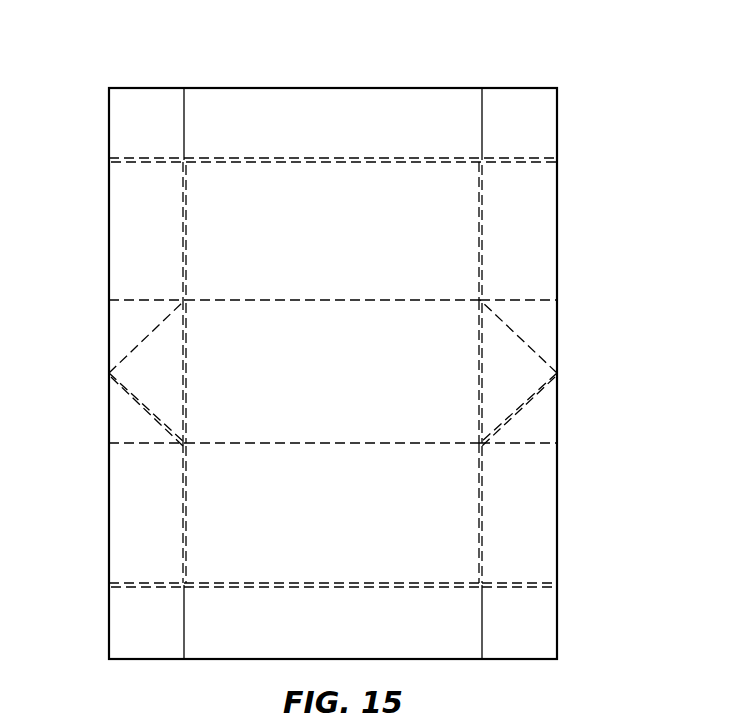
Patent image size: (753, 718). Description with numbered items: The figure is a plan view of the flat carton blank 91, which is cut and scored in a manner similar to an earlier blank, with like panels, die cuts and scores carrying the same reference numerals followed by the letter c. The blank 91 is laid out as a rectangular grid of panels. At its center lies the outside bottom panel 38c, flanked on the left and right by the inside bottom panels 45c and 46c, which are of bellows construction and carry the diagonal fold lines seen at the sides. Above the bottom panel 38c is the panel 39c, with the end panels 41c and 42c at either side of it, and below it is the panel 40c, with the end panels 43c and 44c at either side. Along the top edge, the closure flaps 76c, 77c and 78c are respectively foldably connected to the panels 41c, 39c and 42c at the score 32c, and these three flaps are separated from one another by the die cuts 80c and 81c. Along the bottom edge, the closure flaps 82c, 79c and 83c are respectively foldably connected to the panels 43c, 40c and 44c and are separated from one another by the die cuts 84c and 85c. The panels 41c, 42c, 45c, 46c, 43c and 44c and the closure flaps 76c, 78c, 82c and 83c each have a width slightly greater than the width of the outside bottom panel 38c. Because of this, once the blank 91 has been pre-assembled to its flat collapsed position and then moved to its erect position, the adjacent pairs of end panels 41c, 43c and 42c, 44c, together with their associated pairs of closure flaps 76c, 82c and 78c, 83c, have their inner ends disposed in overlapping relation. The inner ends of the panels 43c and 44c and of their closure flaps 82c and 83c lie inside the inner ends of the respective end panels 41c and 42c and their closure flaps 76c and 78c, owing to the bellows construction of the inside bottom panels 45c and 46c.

The blank 91 is at (565, 208).
The closure flap 76c is at (164, 126).
The closure flap 77c is at (352, 126).
The closure flap 78c is at (541, 127).
The die cut 80c is at (184, 120).
The die cut 81c is at (483, 103).
The score 32c is at (312, 161).
The end panel 41c is at (164, 242).
The panel 39c is at (352, 242).
The end panel 42c is at (538, 243).
The outside bottom panel 38c is at (342, 364).
The inside bottom panel 45c is at (147, 385).
The inside bottom panel 46c is at (508, 380).
The end panel 43c is at (162, 517).
The panel 40c is at (371, 519).
The end panel 44c is at (539, 519).
The closure flap 82c is at (161, 629).
The closure flap 79c is at (359, 629).
The closure flap 83c is at (539, 630).
The die cut 84c is at (184, 635).
The die cut 85c is at (481, 628).